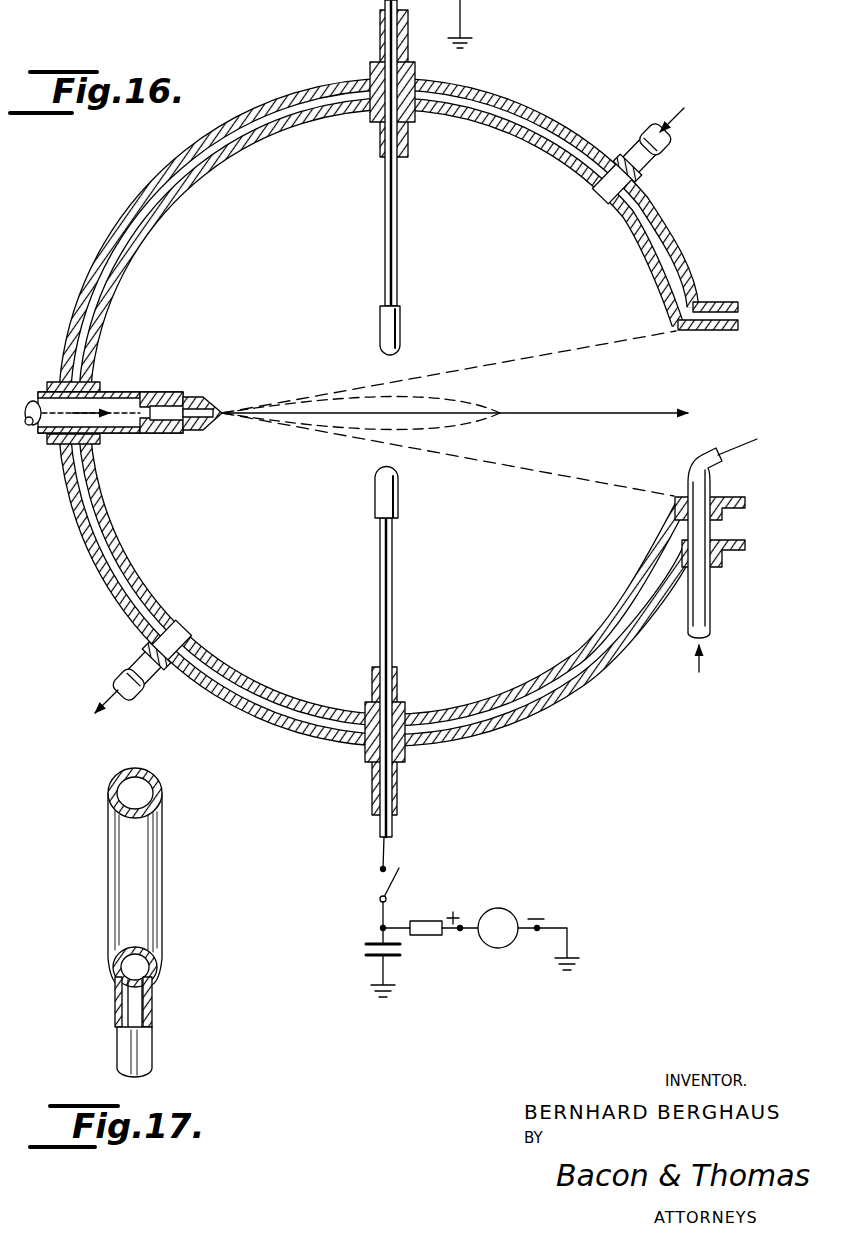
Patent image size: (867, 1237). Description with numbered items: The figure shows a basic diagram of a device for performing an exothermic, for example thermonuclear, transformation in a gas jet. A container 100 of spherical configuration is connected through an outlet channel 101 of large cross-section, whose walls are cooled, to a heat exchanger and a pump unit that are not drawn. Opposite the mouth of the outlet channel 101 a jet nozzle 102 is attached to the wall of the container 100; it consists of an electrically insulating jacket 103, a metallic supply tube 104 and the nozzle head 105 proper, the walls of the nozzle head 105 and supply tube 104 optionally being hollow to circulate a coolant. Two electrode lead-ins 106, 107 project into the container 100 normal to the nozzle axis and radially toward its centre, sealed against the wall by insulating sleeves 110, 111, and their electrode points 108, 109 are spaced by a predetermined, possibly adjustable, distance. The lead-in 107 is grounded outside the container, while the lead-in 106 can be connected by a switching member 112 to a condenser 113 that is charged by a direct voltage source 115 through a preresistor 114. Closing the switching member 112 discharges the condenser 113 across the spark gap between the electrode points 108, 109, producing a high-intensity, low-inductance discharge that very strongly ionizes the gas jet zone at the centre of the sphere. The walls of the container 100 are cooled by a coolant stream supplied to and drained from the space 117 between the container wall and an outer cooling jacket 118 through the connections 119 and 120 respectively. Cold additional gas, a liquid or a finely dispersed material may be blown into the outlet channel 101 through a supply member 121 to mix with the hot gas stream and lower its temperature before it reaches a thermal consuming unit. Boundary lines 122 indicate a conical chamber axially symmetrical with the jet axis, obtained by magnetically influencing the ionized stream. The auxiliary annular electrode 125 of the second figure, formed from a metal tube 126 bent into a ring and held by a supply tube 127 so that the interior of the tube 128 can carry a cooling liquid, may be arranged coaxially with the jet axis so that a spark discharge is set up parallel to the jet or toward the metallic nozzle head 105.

In FIG. 16, the container 100 is at (404, 415).
In FIG. 16, the outlet channel 101 is at (709, 350).
In FIG. 16, the jet nozzle 102 is at (124, 391).
In FIG. 16, the electrically insulating jacket 103 is at (118, 433).
In FIG. 16, the metallic supply tube 104 is at (37, 400).
In FIG. 16, the nozzle head 105 is at (215, 397).
In FIG. 16, the electrode lead-in 106 is at (392, 550).
In FIG. 16, the electrode lead-in 107 is at (397, 215).
In FIG. 16, the electrode point 108 is at (377, 485).
In FIG. 16, the electrode point 109 is at (380, 328).
In FIG. 16, the insulating sleeve 110 is at (372, 782).
In FIG. 16, the insulating sleeve 111 is at (378, 45).
In FIG. 16, the switching member 112 is at (399, 874).
In FIG. 16, the condenser 113 is at (376, 943).
In FIG. 16, the preresistor 114 is at (422, 921).
In FIG. 16, the direct voltage source 115 is at (489, 948).
In FIG. 16, the space 117 is at (515, 705).
In FIG. 16, the outer cooling jacket 118 is at (590, 676).
In FIG. 16, the connection 119 is at (633, 145).
In FIG. 16, the connection 120 is at (146, 690).
In FIG. 16, the supply member 121 is at (710, 578).
In FIG. 16, the boundary lines 122 is at (508, 461).
In FIG. 17, the annular electrode 125 is at (132, 922).
In FIG. 17, the metal tube 126 is at (150, 872).
In FIG. 17, the supply tube 127 is at (128, 1048).
In FIG. 17, the interior of the tube 128 is at (142, 788).